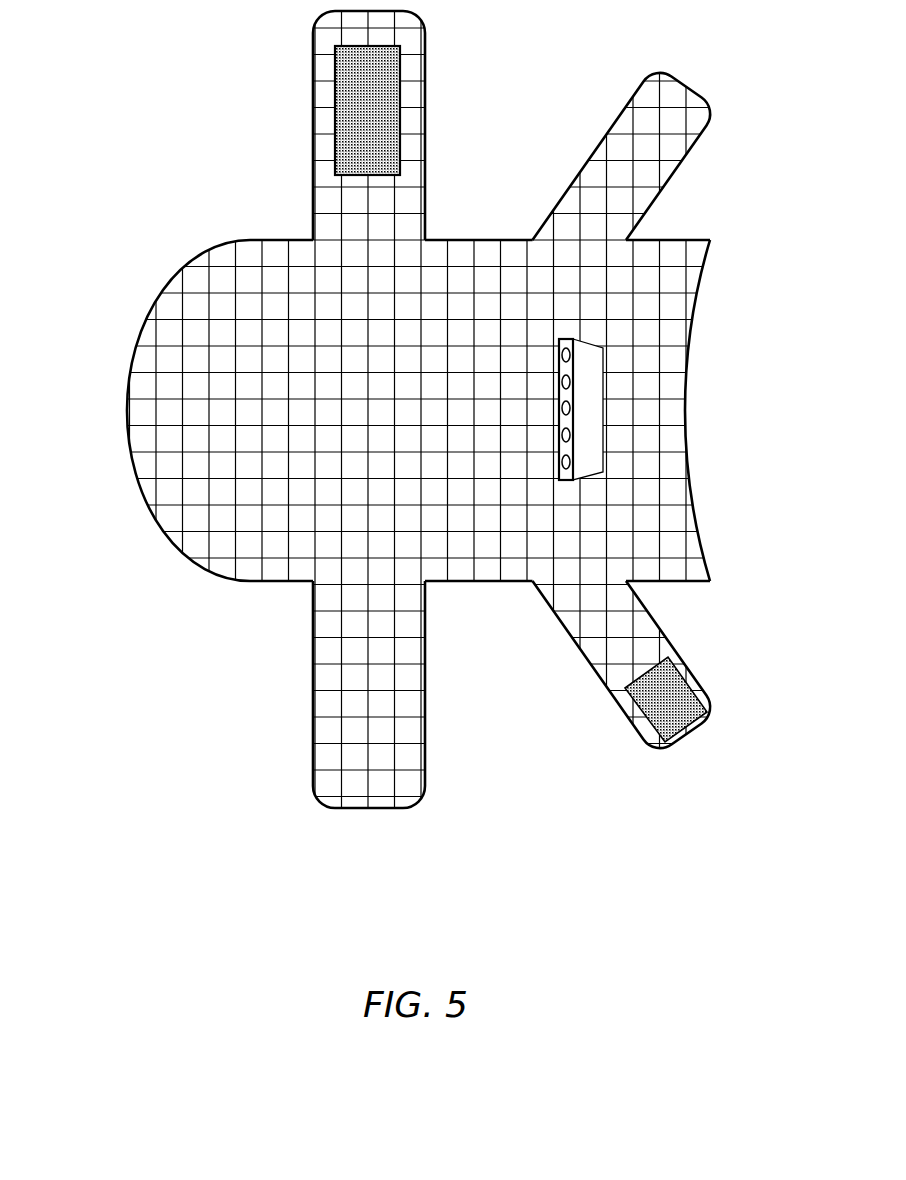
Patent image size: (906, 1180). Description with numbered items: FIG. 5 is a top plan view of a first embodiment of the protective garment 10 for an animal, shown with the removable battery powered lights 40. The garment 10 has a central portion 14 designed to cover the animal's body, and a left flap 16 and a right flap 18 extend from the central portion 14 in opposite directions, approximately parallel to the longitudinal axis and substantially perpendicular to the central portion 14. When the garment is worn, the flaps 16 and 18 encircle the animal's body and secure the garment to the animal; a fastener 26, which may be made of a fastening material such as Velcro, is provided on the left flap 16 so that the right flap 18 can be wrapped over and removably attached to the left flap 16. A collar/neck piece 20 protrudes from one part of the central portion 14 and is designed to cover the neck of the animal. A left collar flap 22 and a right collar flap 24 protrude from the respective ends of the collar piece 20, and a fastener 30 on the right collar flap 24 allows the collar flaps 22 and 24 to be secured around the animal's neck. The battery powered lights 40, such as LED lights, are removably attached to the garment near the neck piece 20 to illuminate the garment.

The protective garment 10 is at (116, 277).
The central portion 14 is at (217, 512).
The left flap 16 is at (428, 54).
The right flap 18 is at (427, 752).
The collar/neck piece 20 is at (668, 420).
The left collar flap 22 is at (683, 93).
The right collar flap 24 is at (693, 742).
The fastener 26 is at (355, 100).
The fastener 30 is at (655, 718).
The removable battery powered lights 40 is at (560, 355).